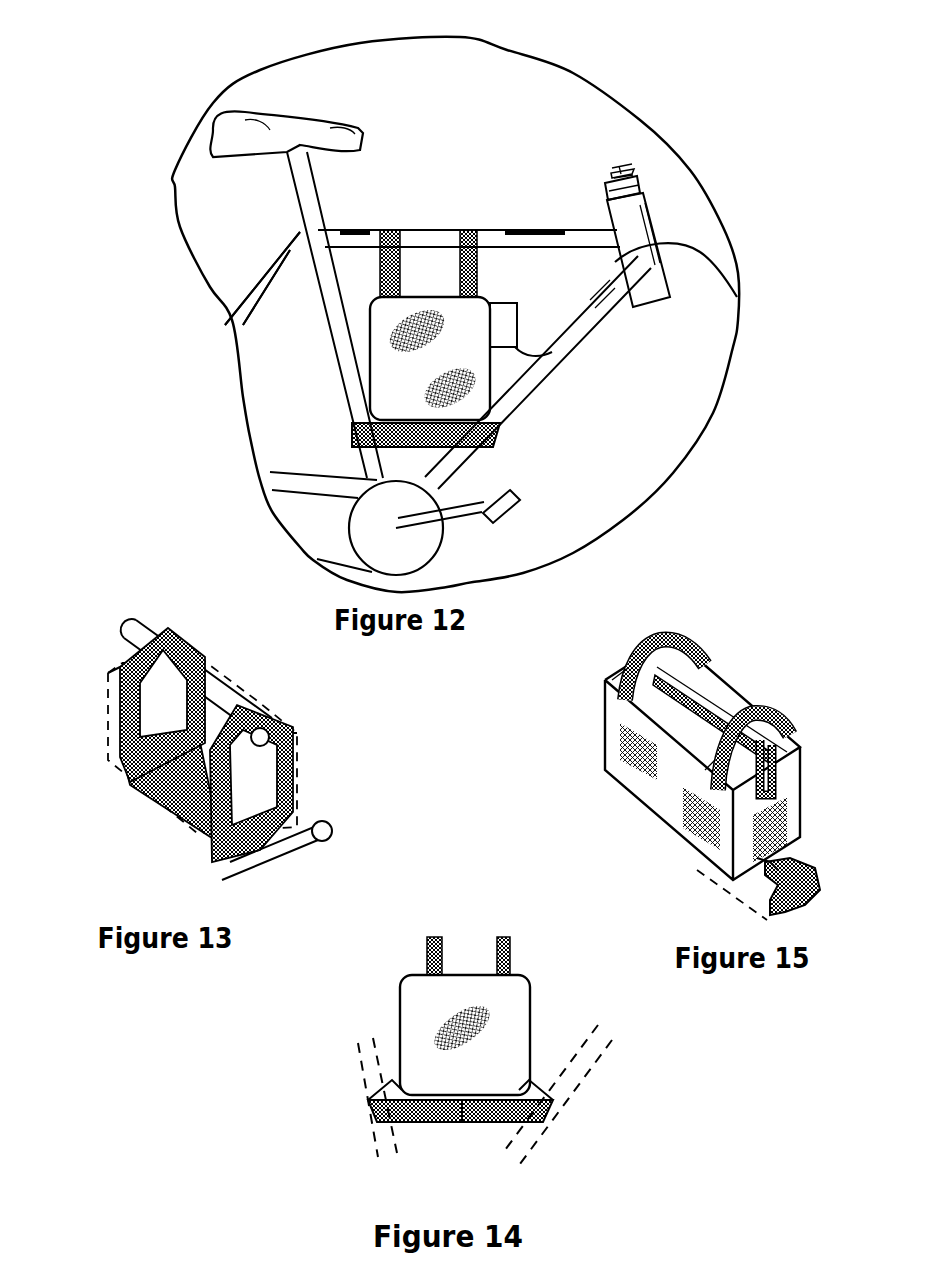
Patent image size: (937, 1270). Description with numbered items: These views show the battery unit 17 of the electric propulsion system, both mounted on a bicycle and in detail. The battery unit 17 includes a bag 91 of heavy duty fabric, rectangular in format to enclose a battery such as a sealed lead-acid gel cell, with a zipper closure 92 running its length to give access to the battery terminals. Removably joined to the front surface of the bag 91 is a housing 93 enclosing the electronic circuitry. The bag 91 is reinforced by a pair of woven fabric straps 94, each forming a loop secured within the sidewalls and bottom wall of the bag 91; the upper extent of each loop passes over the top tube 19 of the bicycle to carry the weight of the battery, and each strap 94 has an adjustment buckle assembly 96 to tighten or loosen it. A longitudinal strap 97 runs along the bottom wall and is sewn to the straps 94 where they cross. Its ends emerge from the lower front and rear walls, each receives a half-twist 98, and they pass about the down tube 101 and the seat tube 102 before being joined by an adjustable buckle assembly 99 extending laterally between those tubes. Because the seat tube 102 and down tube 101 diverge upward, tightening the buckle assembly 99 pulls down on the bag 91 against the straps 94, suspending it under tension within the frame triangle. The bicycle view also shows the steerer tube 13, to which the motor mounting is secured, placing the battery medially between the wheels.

In FIG. 12, the battery unit 17 is at (449, 192).
In FIG. 12, the top tube 19 is at (540, 228).
In FIG. 13, the top tube 19 is at (200, 687).
In FIG. 12, the steerer tube 13 is at (645, 190).
In FIG. 12, the bag 91 is at (403, 358).
In FIG. 13, the bag 91 is at (202, 746).
In FIG. 15, the bag 91 is at (618, 710).
In FIG. 14, the bag 91 is at (427, 993).
In FIG. 15, the zipper closure 92 is at (700, 700).
In FIG. 12, the housing 93 is at (510, 317).
In FIG. 12, the woven fabric straps 94 is at (428, 263).
In FIG. 13, the woven fabric straps 94 is at (163, 633).
In FIG. 15, the woven fabric straps 94 is at (672, 642).
In FIG. 14, the woven fabric straps 94 is at (498, 937).
In FIG. 13, the adjustment buckle assembly 96 is at (120, 663).
In FIG. 15, the adjustment buckle assembly 96 is at (617, 670).
In FIG. 12, the longitudinal strap 97 is at (495, 440).
In FIG. 13, the longitudinal strap 97 is at (187, 790).
In FIG. 15, the longitudinal strap 97 is at (820, 893).
In FIG. 15, the half-twist 98 is at (777, 867).
In FIG. 14, the adjustable buckle assembly 99 is at (462, 1127).
In FIG. 12, the down tube 101 is at (603, 330).
In FIG. 13, the down tube 101 is at (313, 848).
In FIG. 14, the down tube 101 is at (603, 1073).
In FIG. 12, the seat tube 102 is at (317, 318).
In FIG. 14, the seat tube 102 is at (355, 1063).